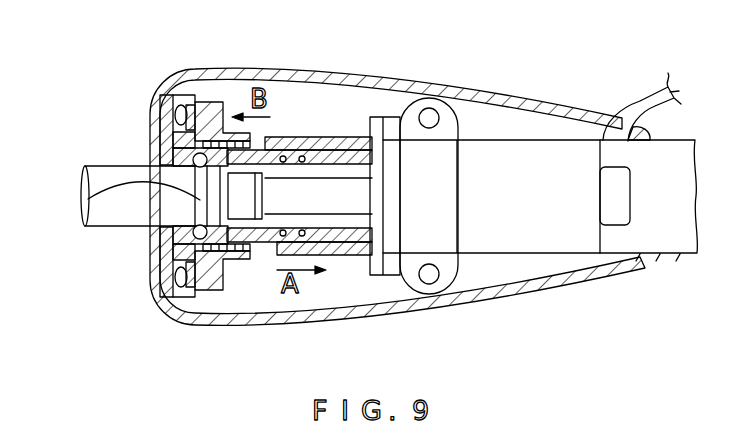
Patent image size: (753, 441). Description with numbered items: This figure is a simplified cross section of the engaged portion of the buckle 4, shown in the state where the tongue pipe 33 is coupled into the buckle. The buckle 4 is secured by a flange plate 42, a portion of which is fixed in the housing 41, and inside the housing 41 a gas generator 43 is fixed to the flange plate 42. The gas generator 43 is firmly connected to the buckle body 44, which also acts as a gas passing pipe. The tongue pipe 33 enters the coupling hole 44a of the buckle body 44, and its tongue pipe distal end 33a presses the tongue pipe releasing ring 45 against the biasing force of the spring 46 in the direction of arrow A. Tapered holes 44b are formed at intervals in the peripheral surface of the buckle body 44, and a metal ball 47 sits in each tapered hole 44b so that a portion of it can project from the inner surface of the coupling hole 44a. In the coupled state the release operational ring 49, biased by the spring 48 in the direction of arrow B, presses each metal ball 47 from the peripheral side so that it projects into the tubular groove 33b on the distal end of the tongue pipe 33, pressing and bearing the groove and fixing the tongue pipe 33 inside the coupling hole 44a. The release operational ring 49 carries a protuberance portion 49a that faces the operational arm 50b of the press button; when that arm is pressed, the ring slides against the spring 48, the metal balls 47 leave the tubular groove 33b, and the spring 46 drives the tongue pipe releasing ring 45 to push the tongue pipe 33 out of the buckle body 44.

The buckle 4 is at (423, 202).
The tongue pipe 33 is at (110, 228).
The tongue pipe distal end 33a is at (268, 240).
The tubular groove 33b is at (86, 196).
The housing 41 is at (488, 92).
The flange plate 42 is at (675, 256).
The gas generator 43 is at (551, 244).
The buckle body 44 is at (372, 118).
The coupling hole 44a is at (337, 138).
The tapered holes 44b is at (205, 288).
The tongue pipe releasing ring 45 is at (276, 163).
The spring 46 is at (292, 194).
The metal balls 47 is at (182, 148).
The spring 48 is at (224, 120).
The release operational ring 49 is at (176, 115).
The protuberance portion 49a is at (196, 103).
The operational arm 50b is at (164, 112).